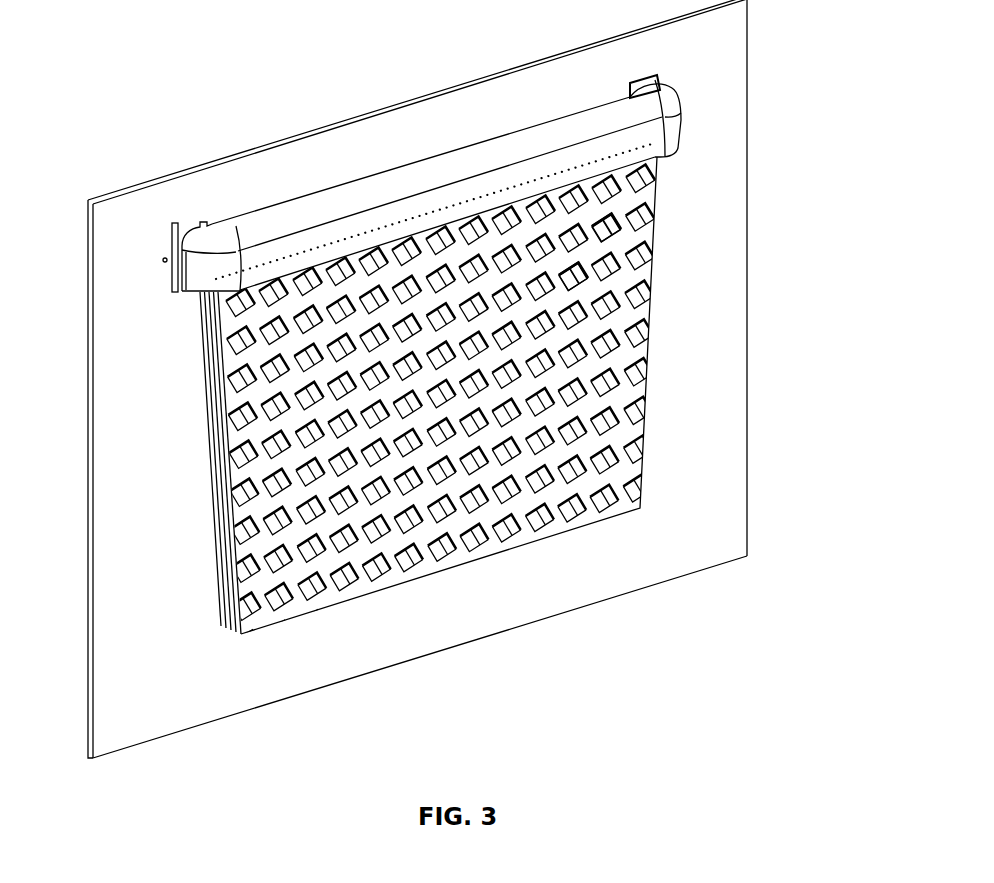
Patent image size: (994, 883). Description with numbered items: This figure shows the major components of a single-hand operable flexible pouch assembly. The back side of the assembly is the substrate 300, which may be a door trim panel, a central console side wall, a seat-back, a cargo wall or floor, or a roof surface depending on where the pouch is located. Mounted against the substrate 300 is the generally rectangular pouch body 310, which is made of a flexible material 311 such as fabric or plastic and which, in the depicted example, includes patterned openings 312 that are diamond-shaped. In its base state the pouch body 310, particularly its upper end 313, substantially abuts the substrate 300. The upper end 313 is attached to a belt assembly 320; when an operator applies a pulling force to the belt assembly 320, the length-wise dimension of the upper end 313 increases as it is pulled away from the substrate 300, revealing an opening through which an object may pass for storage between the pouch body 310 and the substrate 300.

The substrate 300 is at (707, 395).
The pouch body 310 is at (508, 406).
The flexible material 311 is at (587, 292).
The patterned openings 312 is at (598, 228).
The upper end 313 is at (402, 240).
The belt assembly 320 is at (558, 145).